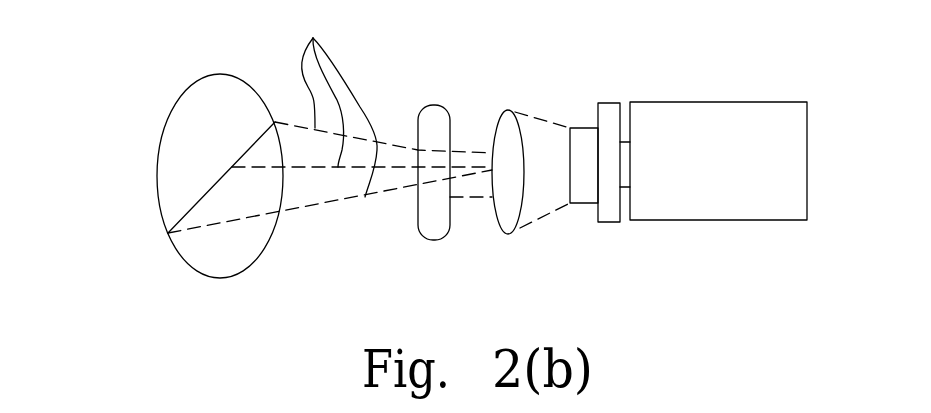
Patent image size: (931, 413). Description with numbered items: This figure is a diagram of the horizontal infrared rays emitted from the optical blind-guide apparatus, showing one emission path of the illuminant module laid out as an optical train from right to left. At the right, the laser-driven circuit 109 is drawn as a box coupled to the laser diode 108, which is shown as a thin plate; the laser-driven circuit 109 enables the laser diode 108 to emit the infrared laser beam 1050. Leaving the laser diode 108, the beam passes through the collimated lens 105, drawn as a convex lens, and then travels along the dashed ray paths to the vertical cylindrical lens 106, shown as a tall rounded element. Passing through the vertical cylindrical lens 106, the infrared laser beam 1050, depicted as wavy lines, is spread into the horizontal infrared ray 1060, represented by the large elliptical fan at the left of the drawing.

The horizontal infrared ray 1060 is at (207, 192).
The infrared laser beam 1050 is at (313, 38).
The vertical cylindrical lens 106 is at (432, 113).
The collimated lens 105 is at (525, 207).
The laser diode 108 is at (607, 113).
The laser-driven circuit 109 is at (728, 112).